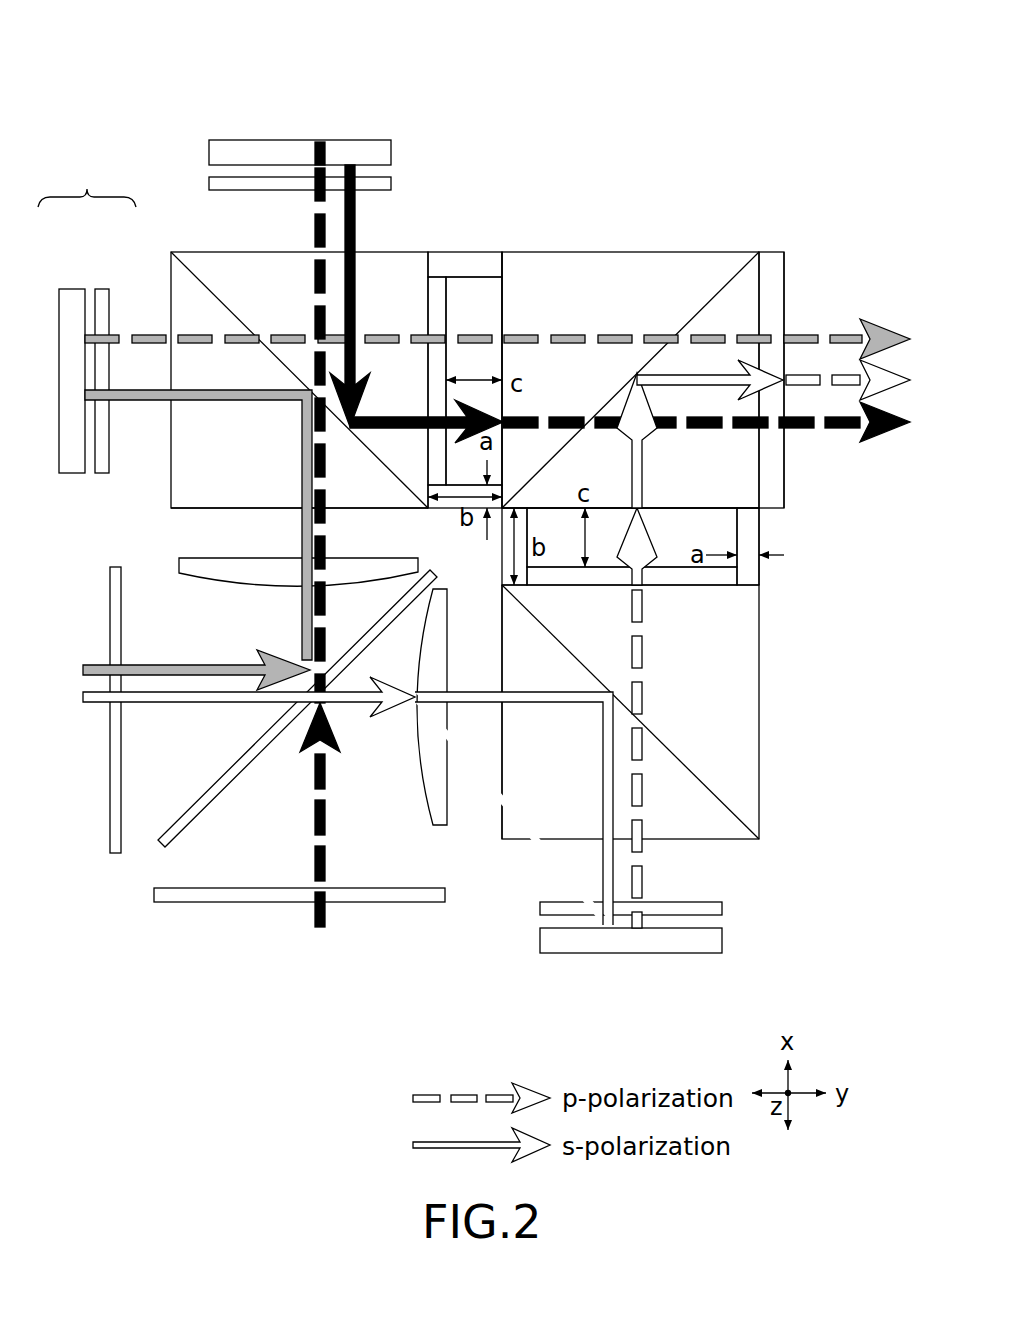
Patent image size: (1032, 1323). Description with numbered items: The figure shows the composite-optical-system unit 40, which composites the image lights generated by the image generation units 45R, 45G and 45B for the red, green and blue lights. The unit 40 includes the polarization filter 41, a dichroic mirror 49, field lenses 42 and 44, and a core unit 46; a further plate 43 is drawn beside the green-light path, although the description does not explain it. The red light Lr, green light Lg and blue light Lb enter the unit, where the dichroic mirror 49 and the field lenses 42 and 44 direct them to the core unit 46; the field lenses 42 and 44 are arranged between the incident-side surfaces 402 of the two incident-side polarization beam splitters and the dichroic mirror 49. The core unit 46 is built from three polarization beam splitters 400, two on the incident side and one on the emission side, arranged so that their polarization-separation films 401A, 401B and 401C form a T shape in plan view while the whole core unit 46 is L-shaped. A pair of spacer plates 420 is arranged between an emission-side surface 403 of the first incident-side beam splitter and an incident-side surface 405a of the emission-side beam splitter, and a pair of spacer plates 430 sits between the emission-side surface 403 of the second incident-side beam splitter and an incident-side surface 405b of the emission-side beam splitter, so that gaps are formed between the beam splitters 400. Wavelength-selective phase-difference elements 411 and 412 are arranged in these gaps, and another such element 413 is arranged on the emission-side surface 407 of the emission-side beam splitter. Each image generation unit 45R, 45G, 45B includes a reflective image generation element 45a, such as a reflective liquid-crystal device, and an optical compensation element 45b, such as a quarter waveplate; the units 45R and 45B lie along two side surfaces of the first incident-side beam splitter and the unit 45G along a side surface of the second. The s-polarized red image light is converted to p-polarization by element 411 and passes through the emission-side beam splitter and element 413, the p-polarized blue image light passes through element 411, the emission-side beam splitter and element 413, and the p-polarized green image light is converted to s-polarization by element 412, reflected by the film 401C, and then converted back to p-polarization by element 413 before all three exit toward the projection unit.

The composite-optical-system unit 40 is at (599, 95).
The polarization beam splitter 400 is at (213, 262).
The polarization-separation film 401A is at (226, 305).
The polarization-separation film 401B is at (716, 786).
The polarization-separation film 401C is at (718, 290).
The incident-side surface 402 is at (218, 508).
The emission-side surface 403 is at (440, 290).
The incident-side surface 405a is at (492, 320).
The incident-side surface 405b is at (682, 512).
The emission-side surface 407 is at (765, 297).
The wavelength-selective phase-difference element 411 is at (485, 318).
The wavelength-selective phase-difference element 412 is at (717, 522).
The wavelength-selective phase-difference element 413 is at (782, 265).
The spacer plate 420 is at (460, 262).
The spacer plate 430 is at (508, 543).
The polarization filter 41 is at (375, 904).
The field lens 42 is at (205, 587).
The green light source 43 is at (109, 852).
The field lens 44 is at (425, 814).
The image generation element 45a is at (75, 298).
The optical compensation element 45b is at (103, 298).
The image generation unit 45B is at (441, 531).
The image generation unit 45R is at (493, 82).
The image generation unit 45G is at (835, 877).
The core unit 46 is at (786, 611).
The dichroic mirror 49 is at (205, 812).
The blue light Lb is at (226, 664).
The green light Lg is at (181, 705).
The red light Lr is at (330, 766).